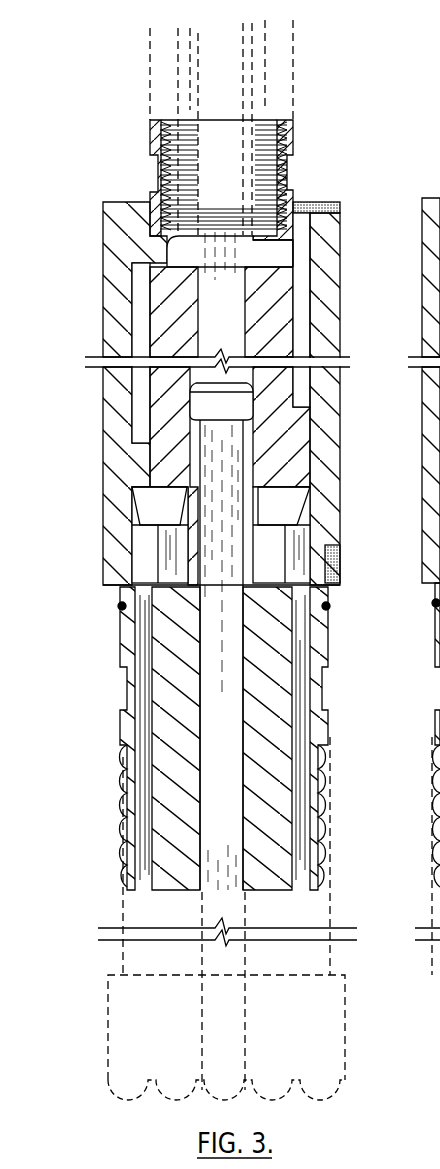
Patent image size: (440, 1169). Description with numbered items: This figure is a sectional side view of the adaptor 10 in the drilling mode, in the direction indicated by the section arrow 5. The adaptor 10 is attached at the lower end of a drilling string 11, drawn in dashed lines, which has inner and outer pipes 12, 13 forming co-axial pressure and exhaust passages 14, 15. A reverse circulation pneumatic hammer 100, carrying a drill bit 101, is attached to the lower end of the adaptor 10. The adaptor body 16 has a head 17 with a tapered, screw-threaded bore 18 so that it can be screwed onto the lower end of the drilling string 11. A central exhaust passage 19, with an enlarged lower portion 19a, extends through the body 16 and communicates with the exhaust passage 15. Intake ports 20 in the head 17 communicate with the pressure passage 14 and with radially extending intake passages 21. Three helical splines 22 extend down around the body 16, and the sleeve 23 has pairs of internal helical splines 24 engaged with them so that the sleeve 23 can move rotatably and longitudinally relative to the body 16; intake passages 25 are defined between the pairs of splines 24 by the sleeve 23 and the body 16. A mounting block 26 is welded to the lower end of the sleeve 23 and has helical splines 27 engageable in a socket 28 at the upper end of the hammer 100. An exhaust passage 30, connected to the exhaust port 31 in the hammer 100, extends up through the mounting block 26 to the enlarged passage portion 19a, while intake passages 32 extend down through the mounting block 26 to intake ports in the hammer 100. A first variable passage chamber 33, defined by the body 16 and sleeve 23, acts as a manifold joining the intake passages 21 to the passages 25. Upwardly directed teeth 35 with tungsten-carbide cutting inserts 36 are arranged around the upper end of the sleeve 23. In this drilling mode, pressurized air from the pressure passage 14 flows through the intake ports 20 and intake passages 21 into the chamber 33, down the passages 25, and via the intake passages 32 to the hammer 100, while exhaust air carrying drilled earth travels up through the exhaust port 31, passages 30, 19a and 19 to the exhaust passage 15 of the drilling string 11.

The section line / view direction 5 is at (415, 327).
The adaptor 10 is at (358, 167).
The drilling string 11 is at (298, 65).
The inner pipe 12 is at (245, 24).
The outer pipe 13 is at (285, 93).
The pressure passage 14 is at (185, 52).
The exhaust passage 15 is at (228, 99).
The adaptor body 16 is at (290, 317).
The head 17 is at (152, 168).
The tapered, screw-threaded bore 18 is at (160, 122).
The central exhaust passage 19 is at (232, 315).
The enlarged lower portion 19a is at (198, 403).
The intake ports 20 is at (185, 262).
The intake passages 21 is at (283, 257).
The helical splines 22 is at (162, 503).
The sleeve 23 is at (347, 510).
The internal helical splines 24 is at (145, 555).
The intake passages 25 is at (303, 392).
The mounting block 26 is at (133, 755).
The helical splines 27 is at (133, 823).
The socket 28 is at (325, 862).
The exhaust passage 30 is at (223, 565).
The exhaust port 31 is at (203, 956).
The intake passages 32 is at (145, 662).
The first variable passage chamber 33 is at (142, 283).
The upwardly directed teeth 35 is at (103, 203).
The tungsten-carbide cutting inserts 36 is at (318, 200).
The reverse circulation pneumatic hammer 100 is at (342, 923).
The drill bit 101 is at (347, 1053).